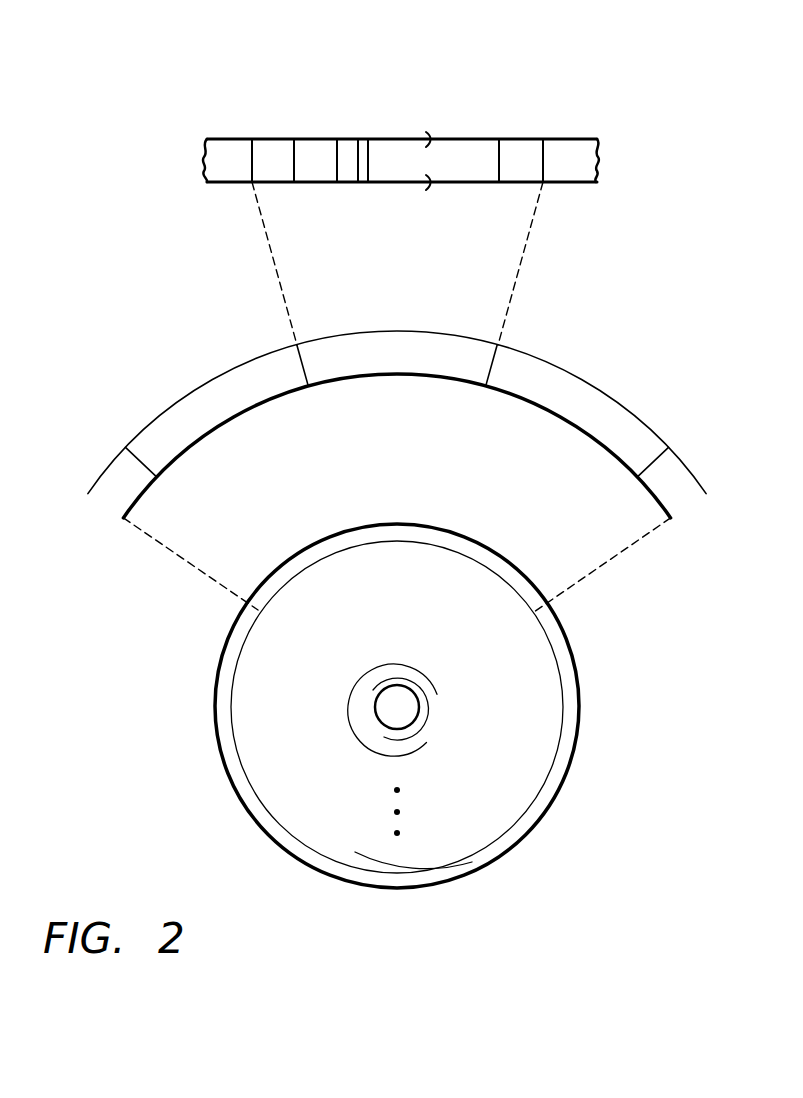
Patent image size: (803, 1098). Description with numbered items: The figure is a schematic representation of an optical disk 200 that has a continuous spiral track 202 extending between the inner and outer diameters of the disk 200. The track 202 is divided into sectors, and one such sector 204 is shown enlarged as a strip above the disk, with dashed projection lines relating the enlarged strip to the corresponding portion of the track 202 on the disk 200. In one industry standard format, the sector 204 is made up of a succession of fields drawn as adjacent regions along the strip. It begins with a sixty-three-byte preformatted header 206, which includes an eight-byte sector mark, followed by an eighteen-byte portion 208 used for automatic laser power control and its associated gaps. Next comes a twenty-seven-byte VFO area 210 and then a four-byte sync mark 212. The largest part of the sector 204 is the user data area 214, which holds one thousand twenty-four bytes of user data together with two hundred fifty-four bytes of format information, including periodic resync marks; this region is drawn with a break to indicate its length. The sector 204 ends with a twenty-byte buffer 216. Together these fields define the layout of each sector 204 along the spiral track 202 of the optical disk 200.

The optical disk 200 is at (583, 710).
The continuous spiral track 202 is at (553, 737).
The sector 204 is at (395, 332).
The preformatted header 206 is at (280, 185).
The portion for automatic laser power control 208 is at (305, 139).
The VFO area 210 is at (348, 139).
The sync mark 212 is at (365, 139).
The user data area 214 is at (443, 139).
The buffer 216 is at (522, 139).